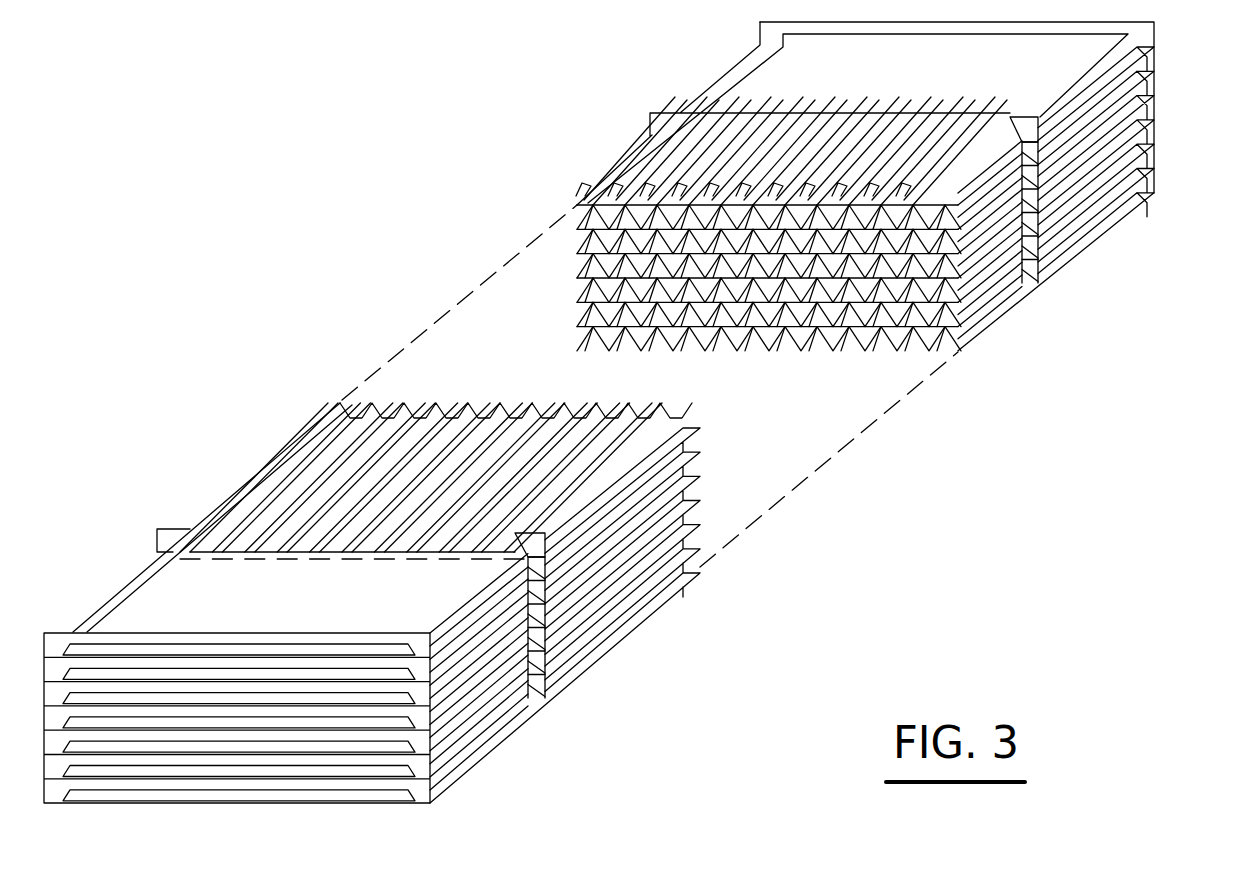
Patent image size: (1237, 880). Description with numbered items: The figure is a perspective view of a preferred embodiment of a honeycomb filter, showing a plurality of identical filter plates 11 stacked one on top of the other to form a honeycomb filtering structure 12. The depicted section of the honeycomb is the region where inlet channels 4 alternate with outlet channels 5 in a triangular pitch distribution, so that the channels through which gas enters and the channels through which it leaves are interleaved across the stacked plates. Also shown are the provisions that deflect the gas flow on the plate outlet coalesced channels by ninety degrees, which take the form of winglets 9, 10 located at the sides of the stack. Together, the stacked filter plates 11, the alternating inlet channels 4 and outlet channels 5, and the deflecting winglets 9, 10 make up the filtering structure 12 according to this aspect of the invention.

The inlet channels 4 is at (800, 346).
The outlet channels 5 is at (873, 346).
The winglets 9 is at (1154, 193).
The winglets 10 is at (1038, 283).
The filter plates 11 is at (716, 422).
The honeycomb filtering structure 12 is at (647, 633).